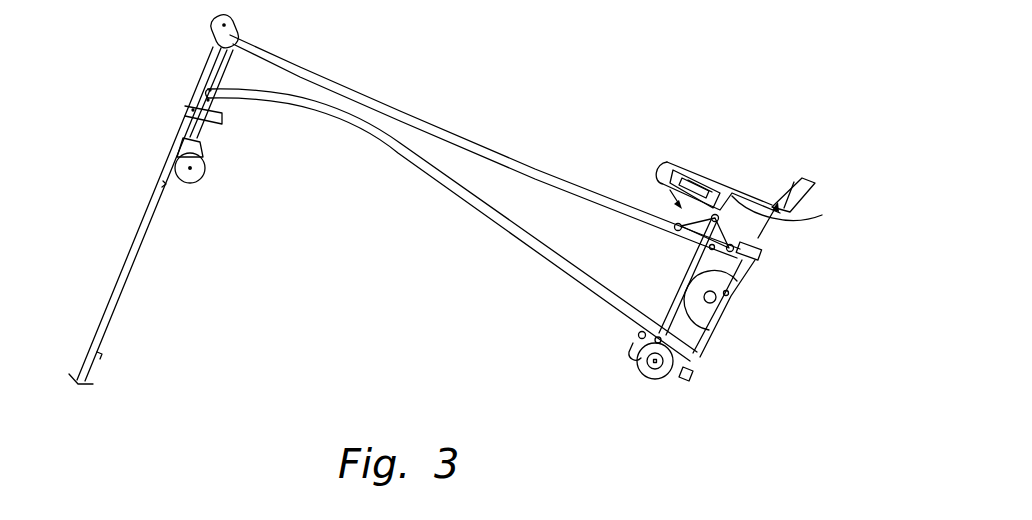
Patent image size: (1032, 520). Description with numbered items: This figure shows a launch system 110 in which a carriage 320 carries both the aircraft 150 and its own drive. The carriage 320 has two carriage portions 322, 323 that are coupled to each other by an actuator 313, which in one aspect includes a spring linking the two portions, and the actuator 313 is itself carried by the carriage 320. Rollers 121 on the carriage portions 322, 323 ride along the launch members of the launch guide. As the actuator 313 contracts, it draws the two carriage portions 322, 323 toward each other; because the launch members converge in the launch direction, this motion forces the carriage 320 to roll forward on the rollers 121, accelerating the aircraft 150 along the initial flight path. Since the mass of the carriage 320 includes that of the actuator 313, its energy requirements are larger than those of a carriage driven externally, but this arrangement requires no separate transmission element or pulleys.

The launch system 110 is at (565, 42).
The rollers 121 is at (675, 225).
The aircraft 150 is at (691, 168).
The actuator 313 is at (655, 283).
The carriage 320 is at (748, 235).
The carriage portion 322 is at (665, 163).
The carriage portion 323 is at (683, 336).